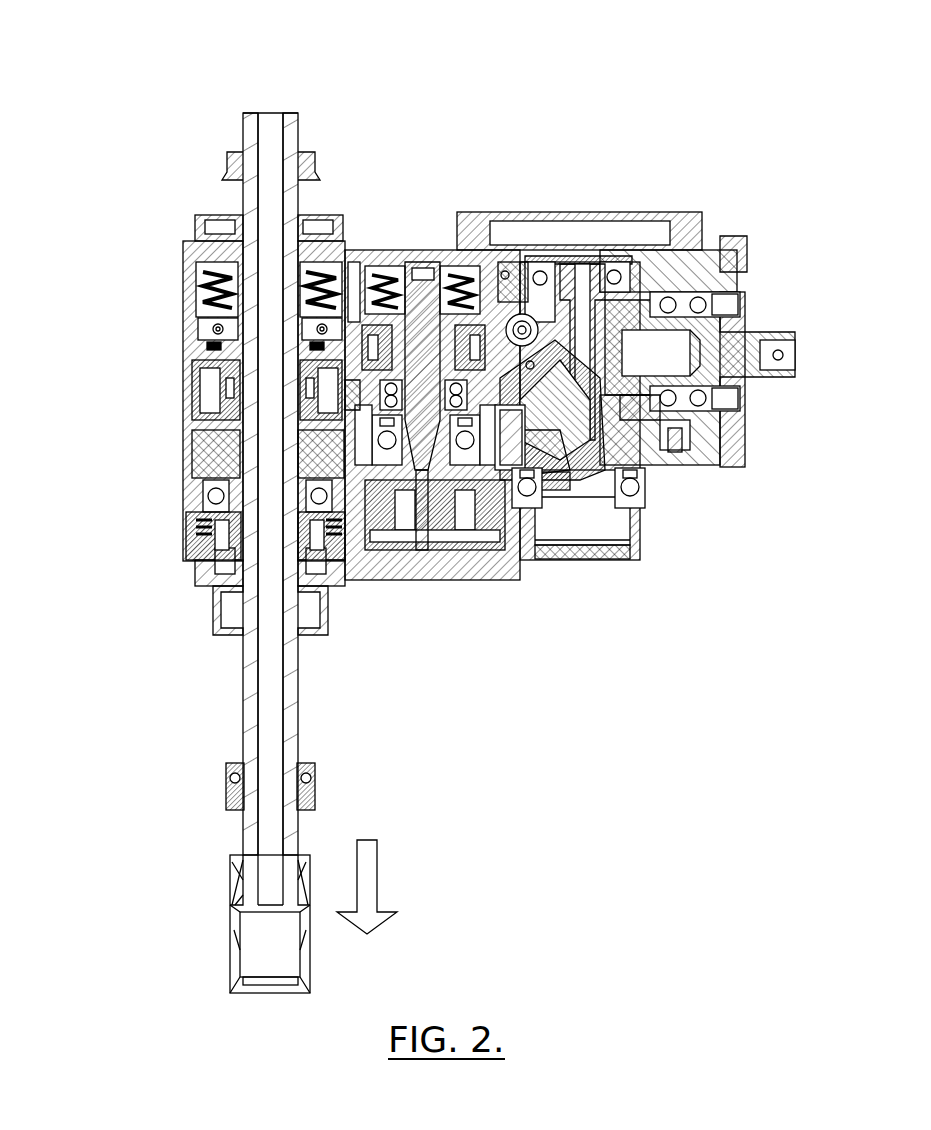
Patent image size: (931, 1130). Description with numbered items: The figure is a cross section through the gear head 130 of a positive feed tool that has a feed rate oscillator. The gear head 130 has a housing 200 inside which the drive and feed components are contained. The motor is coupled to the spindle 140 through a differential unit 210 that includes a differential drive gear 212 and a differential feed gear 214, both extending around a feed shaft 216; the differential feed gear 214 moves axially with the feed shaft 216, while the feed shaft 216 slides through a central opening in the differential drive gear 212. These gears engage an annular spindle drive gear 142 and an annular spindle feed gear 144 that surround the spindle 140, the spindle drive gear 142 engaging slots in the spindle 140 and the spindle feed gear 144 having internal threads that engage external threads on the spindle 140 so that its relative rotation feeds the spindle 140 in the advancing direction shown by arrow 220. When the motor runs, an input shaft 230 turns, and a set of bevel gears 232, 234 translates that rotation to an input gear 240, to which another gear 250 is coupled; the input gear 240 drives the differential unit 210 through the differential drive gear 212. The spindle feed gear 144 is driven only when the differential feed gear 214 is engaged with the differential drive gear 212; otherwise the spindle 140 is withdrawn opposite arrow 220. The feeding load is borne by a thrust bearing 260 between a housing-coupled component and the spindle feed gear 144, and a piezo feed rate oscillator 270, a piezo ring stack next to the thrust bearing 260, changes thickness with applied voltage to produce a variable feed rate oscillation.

The gear head 130 is at (140, 48).
The spindle 140 is at (248, 716).
The spindle drive gear 142 is at (205, 453).
The spindle feed gear 144 is at (200, 395).
The housing 200 is at (469, 213).
The differential unit 210 is at (457, 601).
The differential drive gear 212 is at (500, 456).
The differential feed gear 214 is at (352, 395).
The feed shaft 216 is at (418, 420).
The arrow 220 is at (378, 887).
The input shaft 230 is at (760, 347).
The bevel gear 232 is at (640, 397).
The bevel gear 234 is at (635, 408).
The input gear 240 is at (577, 500).
The gear 250 is at (527, 452).
The thrust bearing 260 is at (213, 346).
The piezo feed rate oscillator 270 is at (201, 328).